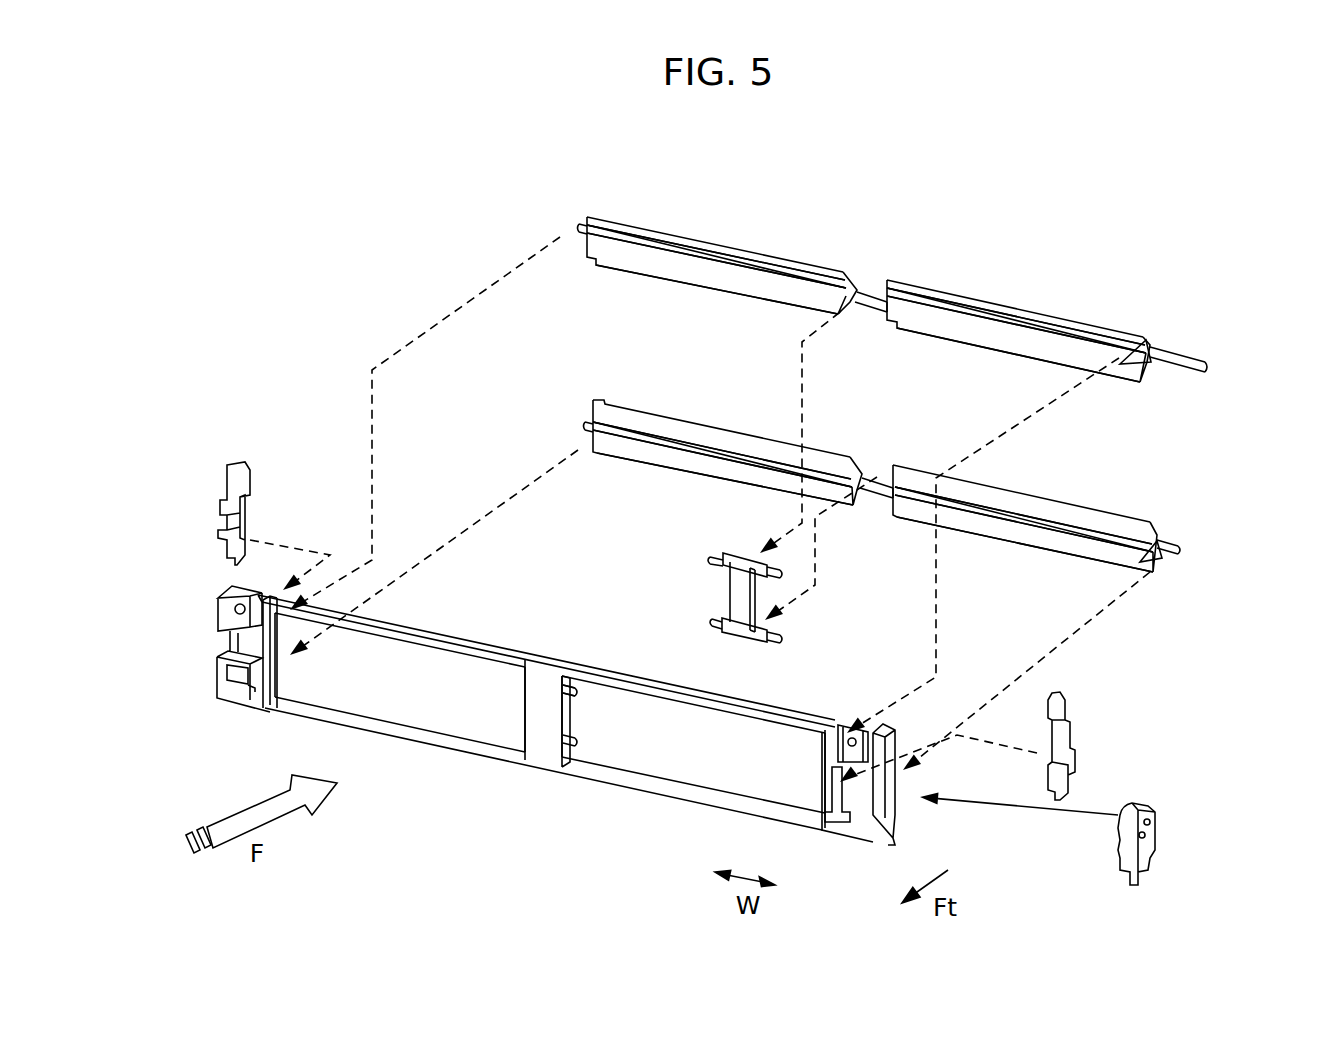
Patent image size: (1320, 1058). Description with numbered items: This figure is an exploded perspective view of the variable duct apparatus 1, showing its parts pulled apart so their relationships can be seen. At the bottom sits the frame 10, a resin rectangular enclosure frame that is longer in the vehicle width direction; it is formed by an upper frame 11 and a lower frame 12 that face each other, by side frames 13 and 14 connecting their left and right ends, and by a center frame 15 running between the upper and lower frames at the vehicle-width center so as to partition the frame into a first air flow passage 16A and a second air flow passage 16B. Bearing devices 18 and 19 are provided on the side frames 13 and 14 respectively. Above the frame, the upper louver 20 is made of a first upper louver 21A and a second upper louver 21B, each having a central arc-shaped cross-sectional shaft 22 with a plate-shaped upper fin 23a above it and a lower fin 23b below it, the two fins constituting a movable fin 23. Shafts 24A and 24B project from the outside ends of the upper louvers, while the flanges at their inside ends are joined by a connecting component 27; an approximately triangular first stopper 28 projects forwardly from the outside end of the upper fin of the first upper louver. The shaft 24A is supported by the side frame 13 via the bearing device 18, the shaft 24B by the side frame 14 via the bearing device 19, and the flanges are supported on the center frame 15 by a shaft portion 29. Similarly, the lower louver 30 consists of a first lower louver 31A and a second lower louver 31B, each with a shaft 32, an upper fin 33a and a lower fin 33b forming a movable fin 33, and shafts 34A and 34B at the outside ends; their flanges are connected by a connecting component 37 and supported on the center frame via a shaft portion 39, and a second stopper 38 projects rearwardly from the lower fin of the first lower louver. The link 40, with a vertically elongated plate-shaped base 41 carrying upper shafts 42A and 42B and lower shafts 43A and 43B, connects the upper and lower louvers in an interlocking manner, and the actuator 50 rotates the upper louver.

The variable duct apparatus 1 is at (1001, 230).
The frame 10 is at (553, 733).
The upper frame 11 is at (448, 634).
The lower frame 12 is at (455, 758).
The side frame 13 is at (860, 808).
The side frame 14 is at (245, 668).
The center frame 15 is at (545, 752).
The first air flow passage 16A is at (665, 765).
The second air flow passage 16B is at (388, 707).
The bearing device 18 is at (1094, 712).
The bearing device 19 is at (276, 473).
The upper louver 20 is at (871, 268).
The first upper louver 21A is at (1047, 309).
The second upper louver 21B is at (695, 231).
The shaft 22 is at (676, 248).
The movable fin 23 is at (868, 160).
The upper fin 23a is at (777, 262).
The lower fin 23b is at (820, 300).
The shaft 24A is at (1172, 355).
The shaft 24B is at (580, 224).
The connecting component 27 is at (868, 293).
The first stopper 28 is at (1148, 375).
The shaft portion 29 is at (585, 672).
The lower louver 30 is at (897, 456).
The first lower louver 31A is at (1076, 506).
The second lower louver 31B is at (699, 419).
The shaft 32 is at (666, 436).
The movable fin 33 is at (690, 370).
The upper fin 33a is at (708, 452).
The lower fin 33b is at (760, 484).
The shaft 34A is at (1170, 560).
The shaft 34B is at (585, 424).
The connecting component 37 is at (880, 477).
The second stopper 38 is at (1185, 549).
The shaft portion 39 is at (580, 742).
The link 40 is at (769, 593).
The base 41 is at (776, 614).
The upper shaft 42A is at (782, 572).
The upper shaft 42B is at (713, 556).
The lower shaft 43A is at (782, 638).
The lower shaft 43B is at (712, 622).
The actuator 50 is at (1158, 818).